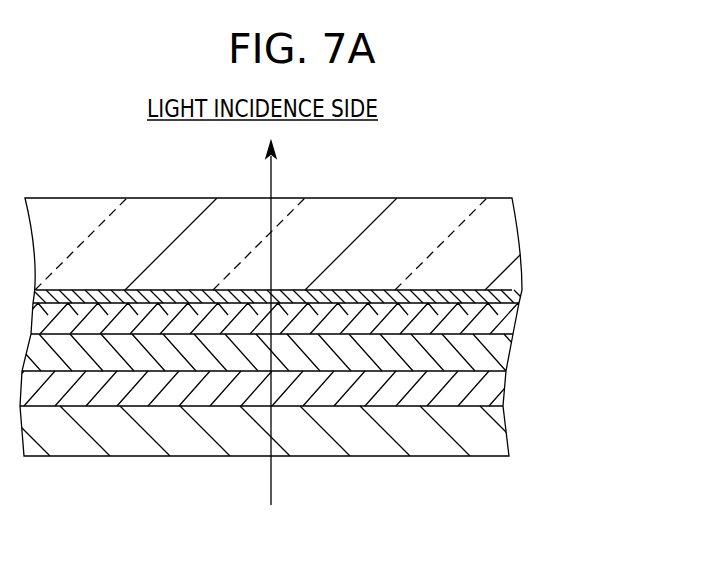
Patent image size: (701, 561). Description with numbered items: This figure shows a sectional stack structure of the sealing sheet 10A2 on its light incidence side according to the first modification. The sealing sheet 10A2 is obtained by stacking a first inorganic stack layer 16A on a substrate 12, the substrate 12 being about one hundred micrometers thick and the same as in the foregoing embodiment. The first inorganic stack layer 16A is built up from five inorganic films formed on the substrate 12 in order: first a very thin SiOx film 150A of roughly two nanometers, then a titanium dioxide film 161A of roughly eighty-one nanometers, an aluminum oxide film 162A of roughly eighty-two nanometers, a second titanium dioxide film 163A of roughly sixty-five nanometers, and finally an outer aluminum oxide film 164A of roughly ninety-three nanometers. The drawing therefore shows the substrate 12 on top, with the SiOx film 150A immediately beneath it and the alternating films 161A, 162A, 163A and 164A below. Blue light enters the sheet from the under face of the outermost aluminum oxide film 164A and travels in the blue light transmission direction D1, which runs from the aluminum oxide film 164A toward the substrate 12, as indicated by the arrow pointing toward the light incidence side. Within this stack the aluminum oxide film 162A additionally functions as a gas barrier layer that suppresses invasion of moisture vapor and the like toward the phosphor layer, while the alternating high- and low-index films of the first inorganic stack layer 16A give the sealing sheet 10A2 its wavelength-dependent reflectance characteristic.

The sealing sheet 10A2 is at (518, 161).
The substrate 12 is at (512, 232).
The first inorganic stack layer 16A is at (623, 280).
The SiOx film 150A is at (522, 296).
The TiO2 film 161A is at (503, 322).
The Al2O3 film 162A is at (500, 353).
The TiO2 film 163A is at (495, 385).
The Al2O3 film 164A is at (492, 428).
The blue light transmission direction D1 is at (271, 487).